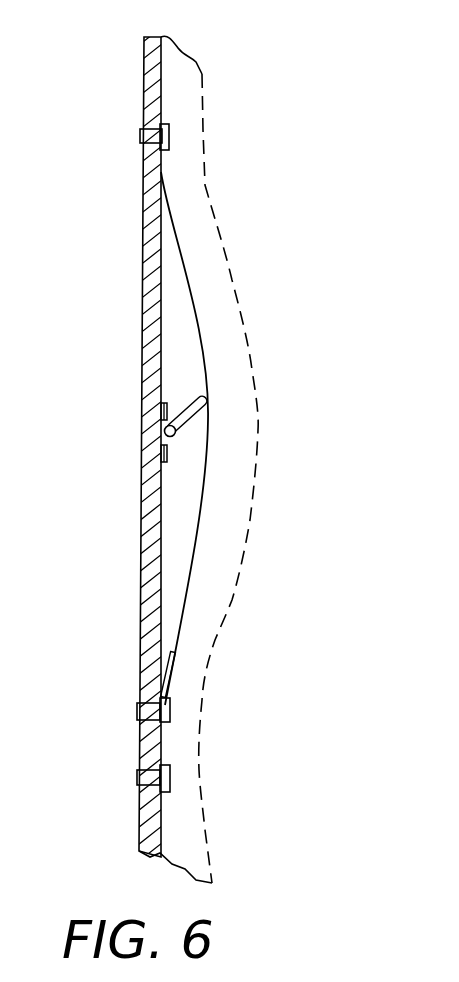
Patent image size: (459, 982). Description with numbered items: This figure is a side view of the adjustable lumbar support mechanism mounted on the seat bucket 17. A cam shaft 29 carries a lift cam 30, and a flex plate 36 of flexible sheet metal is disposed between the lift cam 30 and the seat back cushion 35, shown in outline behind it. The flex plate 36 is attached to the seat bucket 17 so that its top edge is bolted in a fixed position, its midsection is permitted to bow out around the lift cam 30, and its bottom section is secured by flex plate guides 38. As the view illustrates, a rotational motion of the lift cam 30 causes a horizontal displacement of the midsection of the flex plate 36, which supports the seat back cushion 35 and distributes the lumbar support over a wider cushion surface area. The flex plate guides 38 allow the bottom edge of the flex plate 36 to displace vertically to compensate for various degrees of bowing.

The seat bucket 17 is at (147, 577).
The cam shaft 29 is at (162, 430).
The lift cam 30 is at (195, 416).
The seat back cushion 35 is at (217, 298).
The flex plate 36 is at (203, 488).
The flex plate guides 38 is at (170, 667).